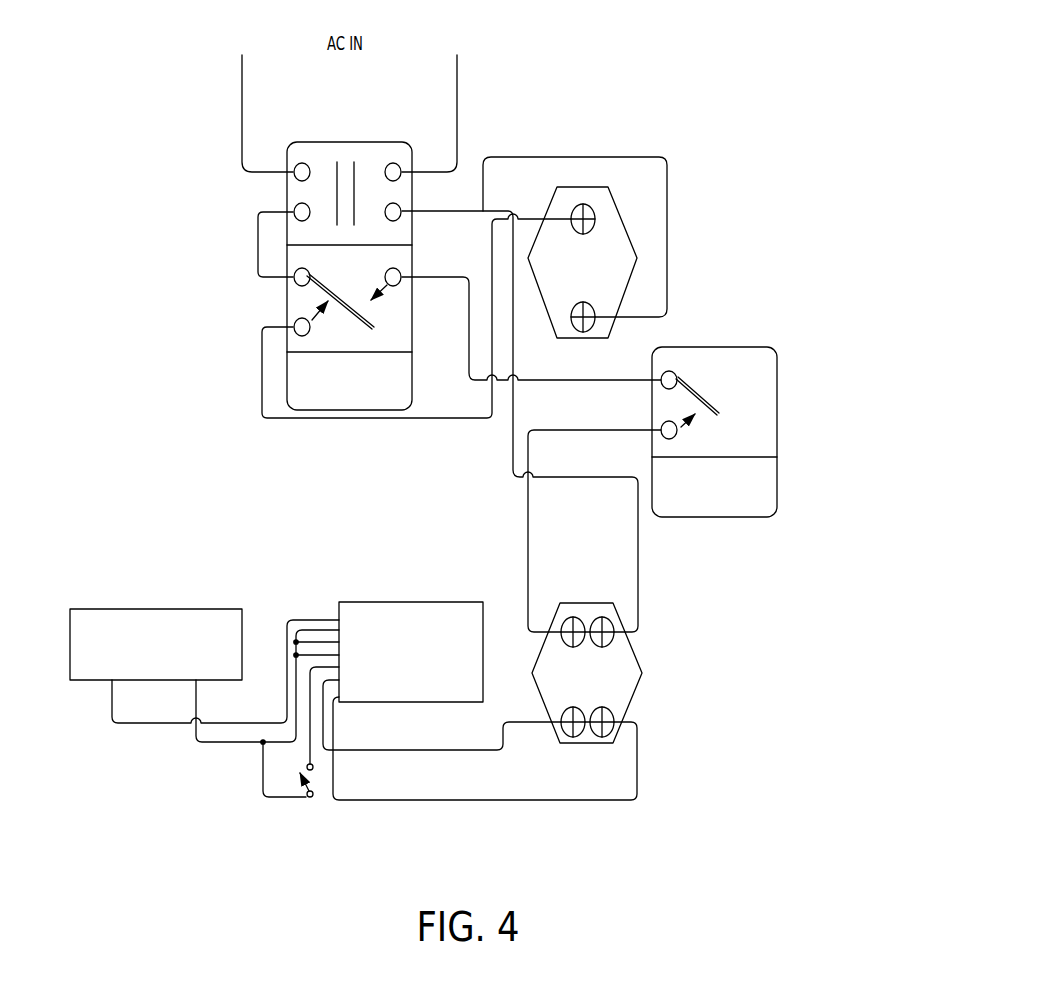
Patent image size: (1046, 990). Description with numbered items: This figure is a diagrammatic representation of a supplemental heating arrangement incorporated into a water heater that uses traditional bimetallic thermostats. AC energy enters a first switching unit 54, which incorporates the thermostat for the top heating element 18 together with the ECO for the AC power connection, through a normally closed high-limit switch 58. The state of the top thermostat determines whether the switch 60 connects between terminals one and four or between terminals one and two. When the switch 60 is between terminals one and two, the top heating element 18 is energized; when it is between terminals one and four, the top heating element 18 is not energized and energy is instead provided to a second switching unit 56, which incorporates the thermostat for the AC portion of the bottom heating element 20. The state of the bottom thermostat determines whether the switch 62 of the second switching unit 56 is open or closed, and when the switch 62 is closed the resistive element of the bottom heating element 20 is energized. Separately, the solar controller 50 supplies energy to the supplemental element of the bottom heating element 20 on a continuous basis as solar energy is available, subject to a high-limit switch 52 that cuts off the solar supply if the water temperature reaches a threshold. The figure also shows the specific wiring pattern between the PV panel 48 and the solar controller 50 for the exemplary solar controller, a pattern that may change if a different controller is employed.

The top heating element 18 is at (618, 204).
The bottom heating element 20 is at (636, 693).
The PV panel 48 is at (157, 608).
The solar controller 50 is at (408, 600).
The high-limit switch 52 is at (320, 801).
The first switching unit 54 is at (278, 306).
The second switching unit 56 is at (793, 475).
The normally closed high-limit switch 58 is at (364, 142).
The switch 60 is at (324, 343).
The switch 62 is at (701, 357).